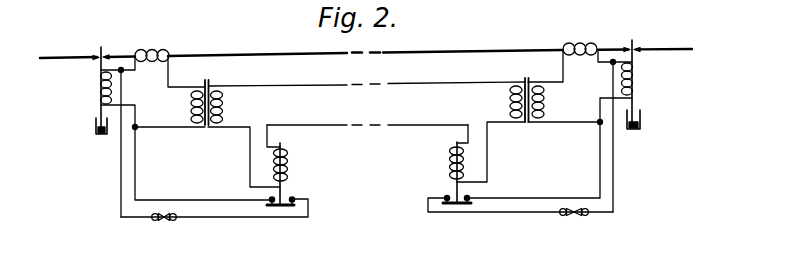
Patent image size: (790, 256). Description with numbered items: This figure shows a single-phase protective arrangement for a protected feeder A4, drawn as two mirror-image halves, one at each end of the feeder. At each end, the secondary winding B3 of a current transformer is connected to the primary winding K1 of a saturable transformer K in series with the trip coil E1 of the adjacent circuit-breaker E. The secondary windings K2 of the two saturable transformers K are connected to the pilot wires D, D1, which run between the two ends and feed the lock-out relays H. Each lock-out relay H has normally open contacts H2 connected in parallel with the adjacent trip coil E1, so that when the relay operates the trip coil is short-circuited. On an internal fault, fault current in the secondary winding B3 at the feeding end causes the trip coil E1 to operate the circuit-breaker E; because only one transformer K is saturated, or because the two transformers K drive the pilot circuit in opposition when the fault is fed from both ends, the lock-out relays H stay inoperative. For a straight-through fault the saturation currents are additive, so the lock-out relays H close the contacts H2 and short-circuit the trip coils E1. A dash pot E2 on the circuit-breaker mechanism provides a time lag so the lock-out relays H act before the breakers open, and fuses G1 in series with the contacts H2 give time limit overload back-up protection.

The protected feeder A4 is at (270, 53).
The secondary winding of the current transformer B3 is at (155, 50).
The circuit-breaker E is at (95, 59).
The trip coil E1 is at (95, 90).
The dash pot E2 is at (97, 132).
The saturable transformer K is at (215, 79).
The primary winding of the saturable transformer K1 is at (198, 113).
The secondary winding of the saturable transformer K2 is at (215, 121).
The pilot wire D is at (336, 83).
The pilot wire D1 is at (334, 120).
The lock-out relay H is at (285, 152).
The normally open contacts H2 is at (297, 207).
The fuse G1 is at (166, 221).